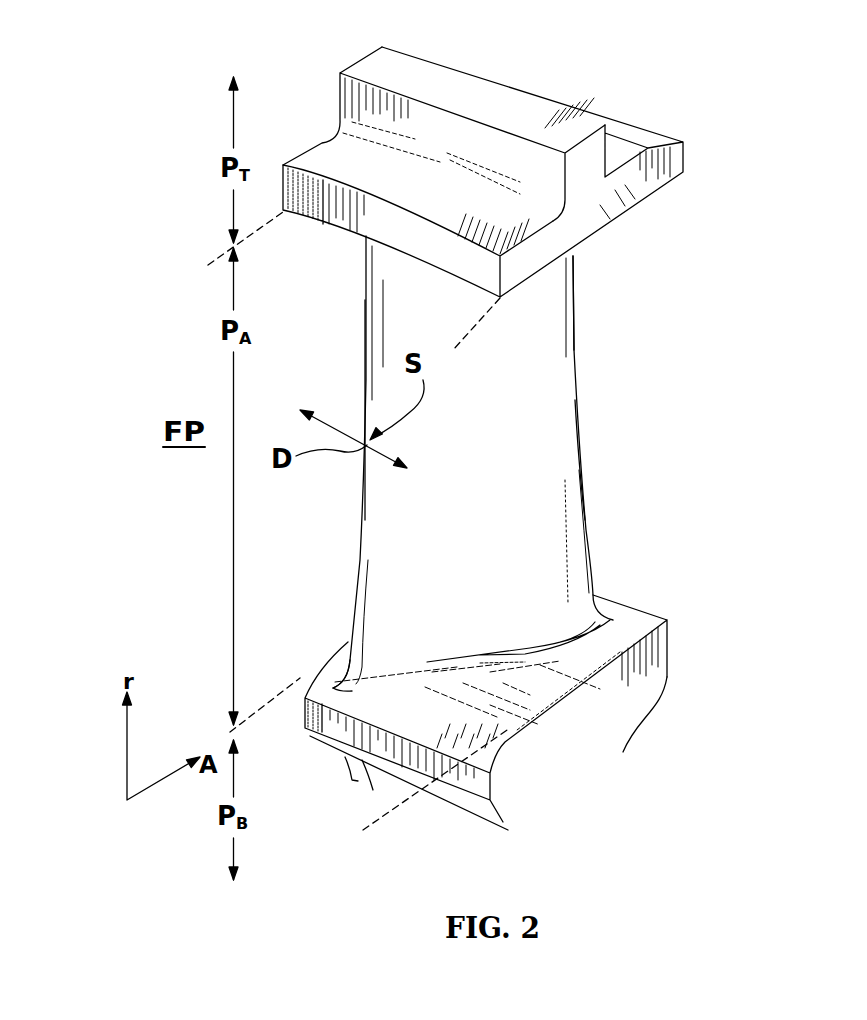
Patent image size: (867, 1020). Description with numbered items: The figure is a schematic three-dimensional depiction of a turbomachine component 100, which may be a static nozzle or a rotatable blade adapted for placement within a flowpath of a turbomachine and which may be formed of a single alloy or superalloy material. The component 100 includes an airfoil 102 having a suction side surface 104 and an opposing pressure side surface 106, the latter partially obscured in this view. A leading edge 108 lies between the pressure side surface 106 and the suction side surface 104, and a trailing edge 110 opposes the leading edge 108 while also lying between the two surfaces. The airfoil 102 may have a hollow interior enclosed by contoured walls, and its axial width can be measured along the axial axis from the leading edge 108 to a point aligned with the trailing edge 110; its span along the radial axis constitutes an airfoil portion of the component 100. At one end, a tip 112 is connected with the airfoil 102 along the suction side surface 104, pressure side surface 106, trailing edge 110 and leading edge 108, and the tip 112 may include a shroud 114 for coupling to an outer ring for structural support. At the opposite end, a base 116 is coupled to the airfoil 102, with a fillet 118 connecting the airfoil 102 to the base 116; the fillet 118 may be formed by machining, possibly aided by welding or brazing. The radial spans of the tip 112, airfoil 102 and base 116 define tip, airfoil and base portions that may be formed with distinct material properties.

The turbomachine component 100 is at (770, 378).
The airfoil 102 is at (506, 555).
The suction side surface 104 is at (347, 624).
The pressure side surface 106 is at (547, 375).
The leading edge 108 is at (383, 503).
The trailing edge 110 is at (582, 497).
The tip 112 is at (653, 182).
The shroud 114 is at (517, 122).
The base 116 is at (647, 670).
The fillet 118 is at (607, 627).